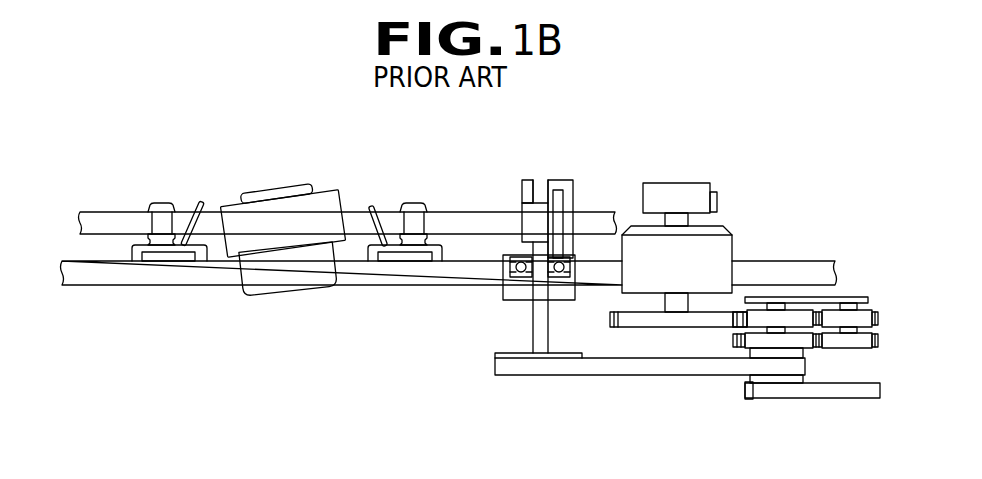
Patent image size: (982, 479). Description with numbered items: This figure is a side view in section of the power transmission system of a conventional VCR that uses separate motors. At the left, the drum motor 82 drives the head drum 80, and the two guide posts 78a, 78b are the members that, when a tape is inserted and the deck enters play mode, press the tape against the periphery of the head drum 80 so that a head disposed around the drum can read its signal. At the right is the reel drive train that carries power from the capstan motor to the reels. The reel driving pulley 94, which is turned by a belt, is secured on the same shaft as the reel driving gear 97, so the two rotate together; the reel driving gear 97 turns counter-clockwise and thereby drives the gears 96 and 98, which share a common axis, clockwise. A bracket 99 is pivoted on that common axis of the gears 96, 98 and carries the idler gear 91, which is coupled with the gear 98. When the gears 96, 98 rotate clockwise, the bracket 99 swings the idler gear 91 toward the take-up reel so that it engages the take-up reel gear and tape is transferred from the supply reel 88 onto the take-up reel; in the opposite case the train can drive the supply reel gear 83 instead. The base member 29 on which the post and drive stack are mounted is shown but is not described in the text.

The guide post 78a is at (195, 202).
The guide post 78b is at (385, 207).
The head drum 80 is at (325, 198).
The drum motor 82 is at (302, 284).
The supply reel 88 is at (715, 248).
The supply reel gear 83 is at (662, 322).
The idler gear 91 is at (738, 327).
The bracket 99 is at (798, 300).
The gear 98 is at (863, 317).
The gear 96 is at (847, 342).
The reel driving gear 97 is at (797, 338).
The base plate 29 is at (660, 375).
The reel driving pulley 94 is at (752, 403).